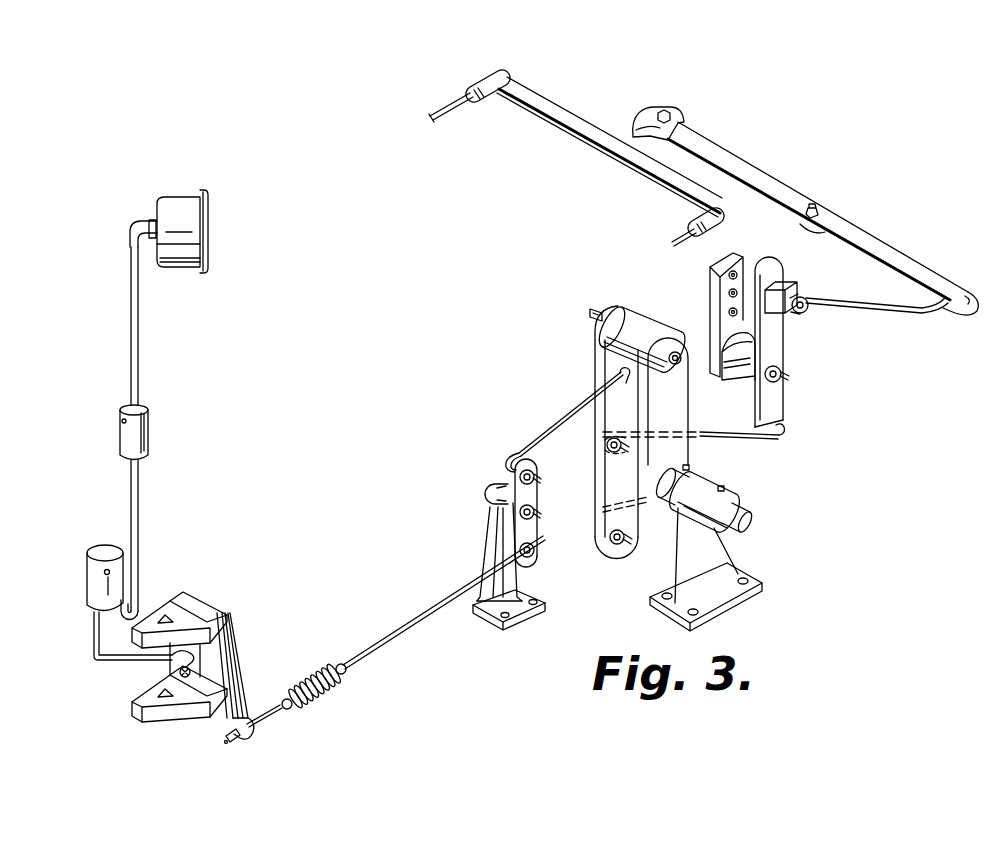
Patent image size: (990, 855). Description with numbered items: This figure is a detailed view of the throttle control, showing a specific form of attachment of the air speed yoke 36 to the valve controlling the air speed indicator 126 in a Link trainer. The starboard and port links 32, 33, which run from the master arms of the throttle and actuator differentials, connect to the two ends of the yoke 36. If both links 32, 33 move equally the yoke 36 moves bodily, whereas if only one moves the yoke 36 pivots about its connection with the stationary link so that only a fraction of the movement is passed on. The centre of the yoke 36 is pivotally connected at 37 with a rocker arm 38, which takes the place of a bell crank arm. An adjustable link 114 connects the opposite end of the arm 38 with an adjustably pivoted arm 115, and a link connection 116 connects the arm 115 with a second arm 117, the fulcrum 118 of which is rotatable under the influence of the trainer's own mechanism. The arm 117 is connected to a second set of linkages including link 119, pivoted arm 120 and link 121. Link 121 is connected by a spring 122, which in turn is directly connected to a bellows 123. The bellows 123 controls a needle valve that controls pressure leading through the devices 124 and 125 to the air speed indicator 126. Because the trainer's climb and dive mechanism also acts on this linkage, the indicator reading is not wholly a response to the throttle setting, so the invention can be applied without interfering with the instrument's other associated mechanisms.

The starboard extension link 32 is at (440, 112).
The port extension link 33 is at (673, 243).
The air speed yoke 36 is at (593, 142).
The pivotal connection 37 is at (655, 112).
The rocker arm 38 is at (777, 183).
The adjustable link 114 is at (862, 312).
The adjustably pivoted arm 115 is at (783, 393).
The link connection 116 is at (716, 432).
The second arm 117 is at (597, 373).
The fulcrum 118 is at (597, 313).
The link 119 is at (550, 433).
The pivoted arm 120 is at (538, 498).
The link 121 is at (433, 610).
The spring 122 is at (310, 667).
The bellows 123 is at (238, 640).
The pressure device 124 is at (60, 589).
The pressure device 125 is at (146, 437).
The air speed indicator 126 is at (178, 203).